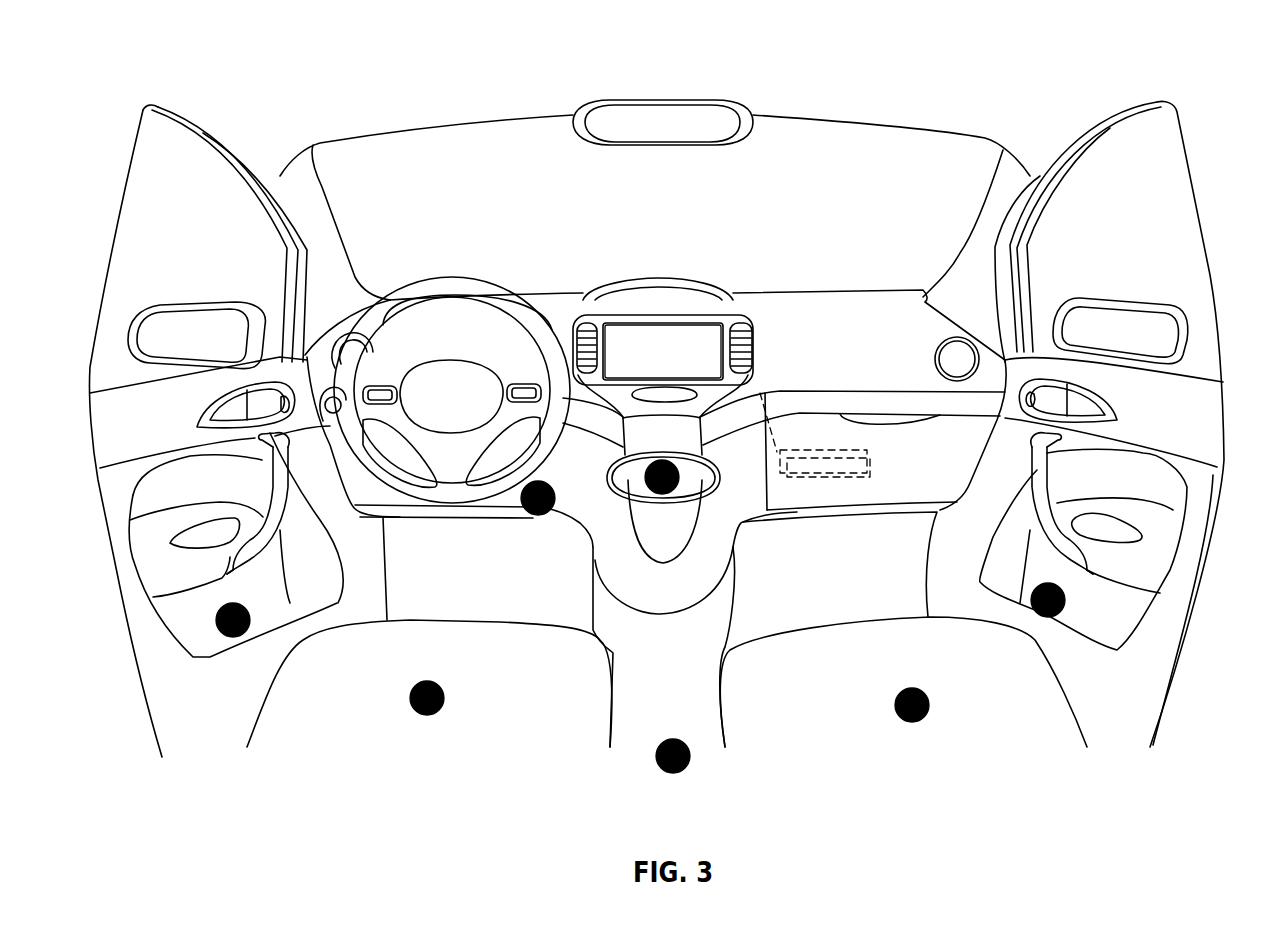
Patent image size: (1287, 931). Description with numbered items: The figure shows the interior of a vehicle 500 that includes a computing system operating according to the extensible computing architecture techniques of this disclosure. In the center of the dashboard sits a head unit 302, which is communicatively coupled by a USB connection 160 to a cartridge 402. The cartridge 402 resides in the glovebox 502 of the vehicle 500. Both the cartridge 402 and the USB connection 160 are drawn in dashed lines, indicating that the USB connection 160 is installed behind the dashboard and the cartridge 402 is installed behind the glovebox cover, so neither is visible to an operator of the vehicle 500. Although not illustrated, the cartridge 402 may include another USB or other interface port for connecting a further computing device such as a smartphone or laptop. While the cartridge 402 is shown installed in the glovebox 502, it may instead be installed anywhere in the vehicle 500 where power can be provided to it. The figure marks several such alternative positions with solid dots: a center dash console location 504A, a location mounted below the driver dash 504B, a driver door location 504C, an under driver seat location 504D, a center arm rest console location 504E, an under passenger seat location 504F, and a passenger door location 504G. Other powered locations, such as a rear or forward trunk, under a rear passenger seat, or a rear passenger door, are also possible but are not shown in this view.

The vehicle 500 is at (1188, 84).
The head unit 302 is at (705, 332).
The USB connection 160 is at (760, 393).
The cartridge 402 is at (870, 458).
The glovebox 502 is at (828, 497).
The center dash console location 504A is at (672, 487).
The below driver dash location 504B is at (532, 510).
The driver door location 504C is at (246, 613).
The under driver seat location 504D is at (437, 683).
The center arm rest console location 504E is at (682, 742).
The under passenger seat location 504F is at (920, 690).
The passenger door location 504G is at (1038, 588).